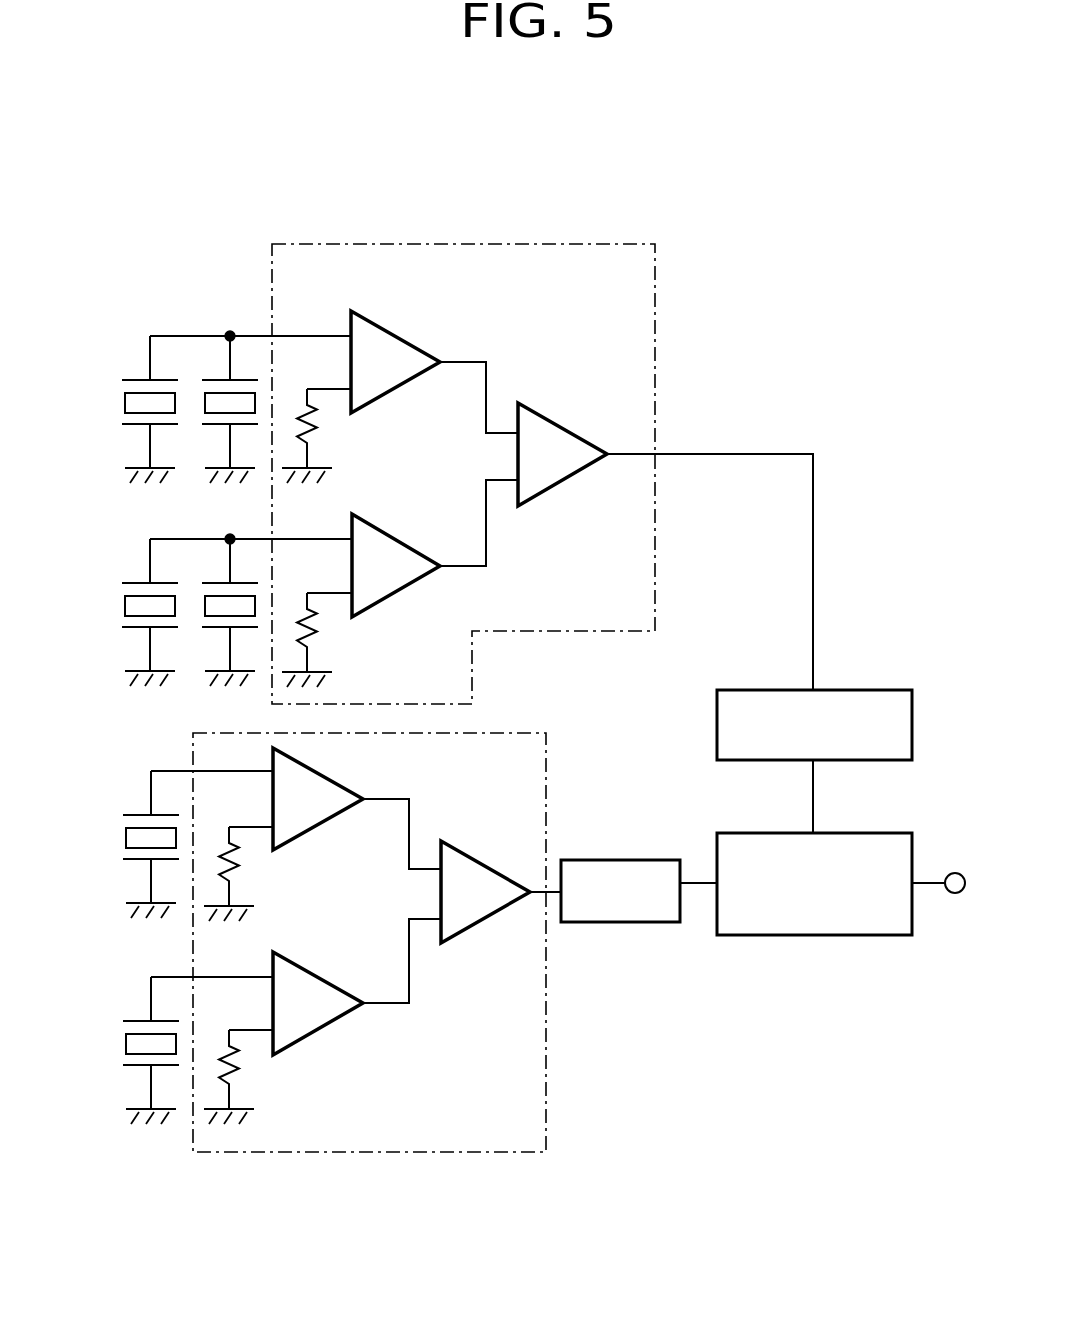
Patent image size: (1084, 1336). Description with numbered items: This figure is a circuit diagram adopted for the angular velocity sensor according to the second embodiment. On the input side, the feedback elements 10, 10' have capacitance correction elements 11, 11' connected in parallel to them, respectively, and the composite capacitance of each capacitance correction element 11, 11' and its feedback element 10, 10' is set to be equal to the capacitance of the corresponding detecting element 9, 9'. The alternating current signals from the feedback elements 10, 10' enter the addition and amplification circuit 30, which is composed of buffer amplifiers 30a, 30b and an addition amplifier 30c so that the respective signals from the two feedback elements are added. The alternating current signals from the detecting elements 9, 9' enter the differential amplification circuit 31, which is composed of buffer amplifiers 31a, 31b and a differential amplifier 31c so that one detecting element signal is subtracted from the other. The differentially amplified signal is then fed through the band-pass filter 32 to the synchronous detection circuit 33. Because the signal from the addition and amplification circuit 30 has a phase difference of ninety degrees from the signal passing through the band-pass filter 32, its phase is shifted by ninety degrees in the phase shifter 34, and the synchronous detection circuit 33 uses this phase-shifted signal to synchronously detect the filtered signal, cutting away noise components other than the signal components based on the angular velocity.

The detecting element 9 is at (145, 824).
The detecting element 9' is at (145, 1029).
The feedback element 10 is at (139, 386).
The feedback element 10' is at (139, 589).
The capacitance correction element 11 is at (219, 386).
The capacitance correction element 11' is at (219, 589).
The addition and amplification circuit 30 is at (450, 243).
The buffer amplifier 30a is at (407, 340).
The buffer amplifier 30b is at (407, 545).
The addition amplifier 30c is at (577, 436).
The differential amplification circuit 31 is at (366, 1153).
The buffer amplifier 31a is at (325, 775).
The buffer amplifier 31b is at (335, 985).
The differential amplifier 31c is at (497, 872).
The band-pass filter 32 is at (617, 924).
The synchronous detection circuit 33 is at (797, 937).
The 90° phase shifter 34 is at (866, 690).